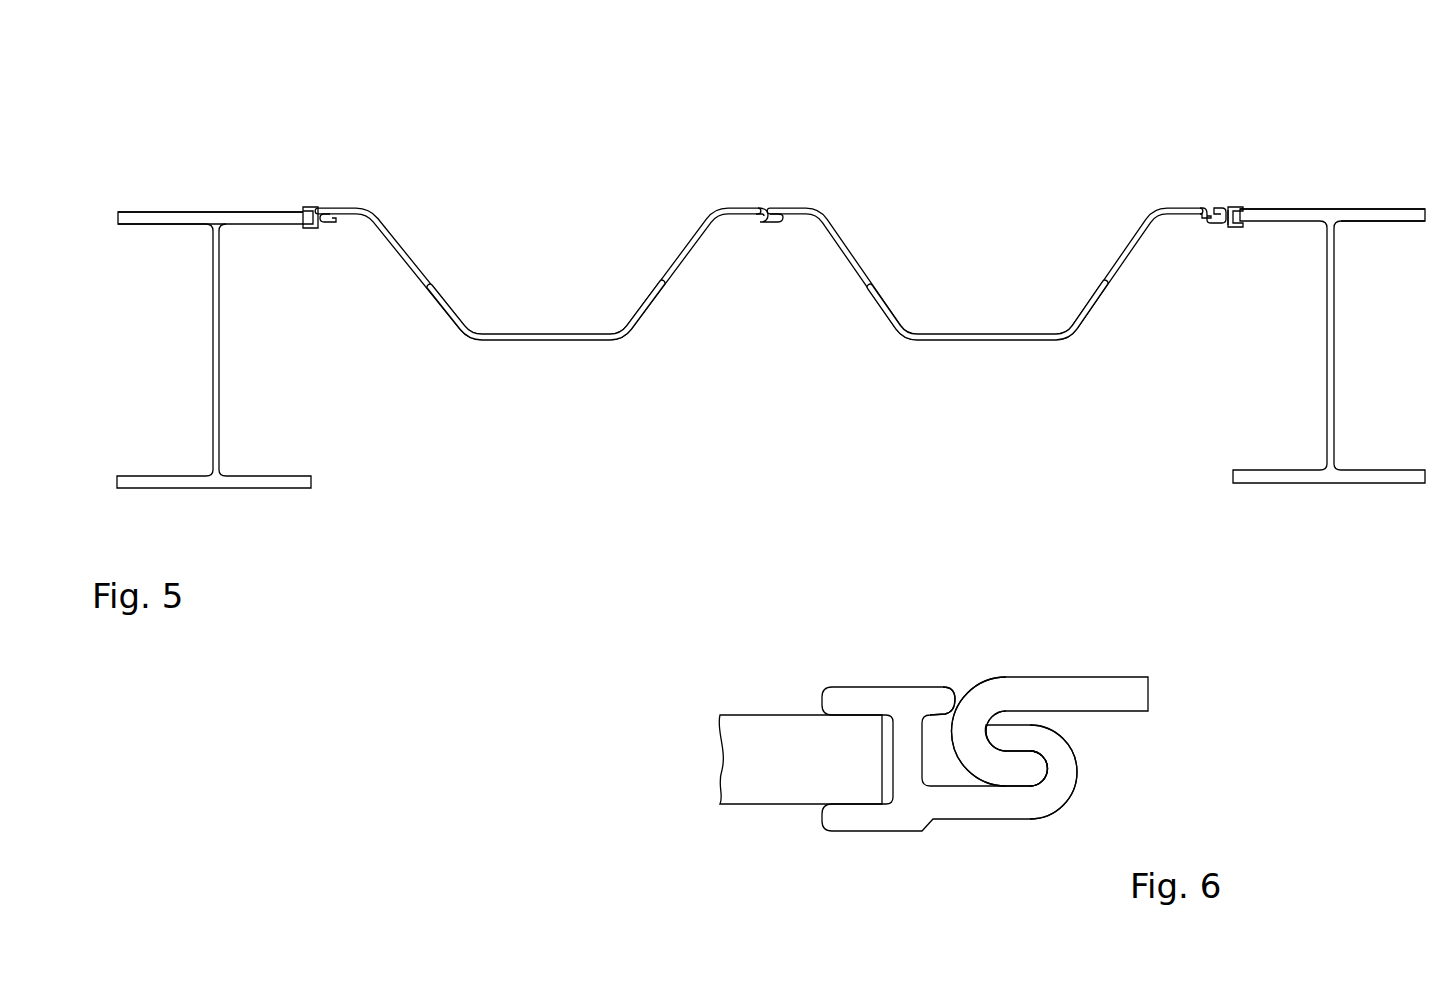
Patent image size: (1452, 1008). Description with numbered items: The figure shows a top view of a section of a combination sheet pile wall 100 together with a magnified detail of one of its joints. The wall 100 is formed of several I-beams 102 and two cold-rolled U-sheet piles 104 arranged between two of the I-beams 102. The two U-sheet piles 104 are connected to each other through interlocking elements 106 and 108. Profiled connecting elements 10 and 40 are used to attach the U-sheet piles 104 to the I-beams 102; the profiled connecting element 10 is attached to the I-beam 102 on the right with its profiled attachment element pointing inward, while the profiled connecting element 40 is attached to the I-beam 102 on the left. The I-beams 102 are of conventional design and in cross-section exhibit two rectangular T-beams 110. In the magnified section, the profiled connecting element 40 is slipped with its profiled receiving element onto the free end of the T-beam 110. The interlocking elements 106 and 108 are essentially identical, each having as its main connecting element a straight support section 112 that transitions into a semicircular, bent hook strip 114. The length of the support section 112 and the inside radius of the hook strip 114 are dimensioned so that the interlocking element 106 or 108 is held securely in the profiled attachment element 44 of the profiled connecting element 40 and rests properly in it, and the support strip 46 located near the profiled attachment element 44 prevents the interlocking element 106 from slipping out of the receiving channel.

In FIG. 5, the profiled connecting element 10 is at (1238, 208).
In FIG. 5, the profiled connecting element 40 is at (320, 212).
In FIG. 6, the profiled connecting element 40 is at (989, 710).
In FIG. 6, the profiled attachment element 44 is at (1052, 776).
In FIG. 6, the support strip 46 is at (933, 695).
In FIG. 5, the combination sheet pile wall 100 is at (776, 198).
In FIG. 5, the I-beam 102 is at (771, 300).
In FIG. 5, the U-sheet pile 104 is at (497, 334).
In FIG. 5, the interlocking element 106 is at (776, 239).
In FIG. 6, the interlocking element 106 is at (1058, 734).
In FIG. 5, the interlocking element 108 is at (760, 222).
In FIG. 5, the T-beam 110 is at (252, 215).
In FIG. 6, the T-beam 110 is at (762, 724).
In FIG. 6, the support section 112 is at (1015, 688).
In FIG. 6, the hook strip 114 is at (1018, 778).